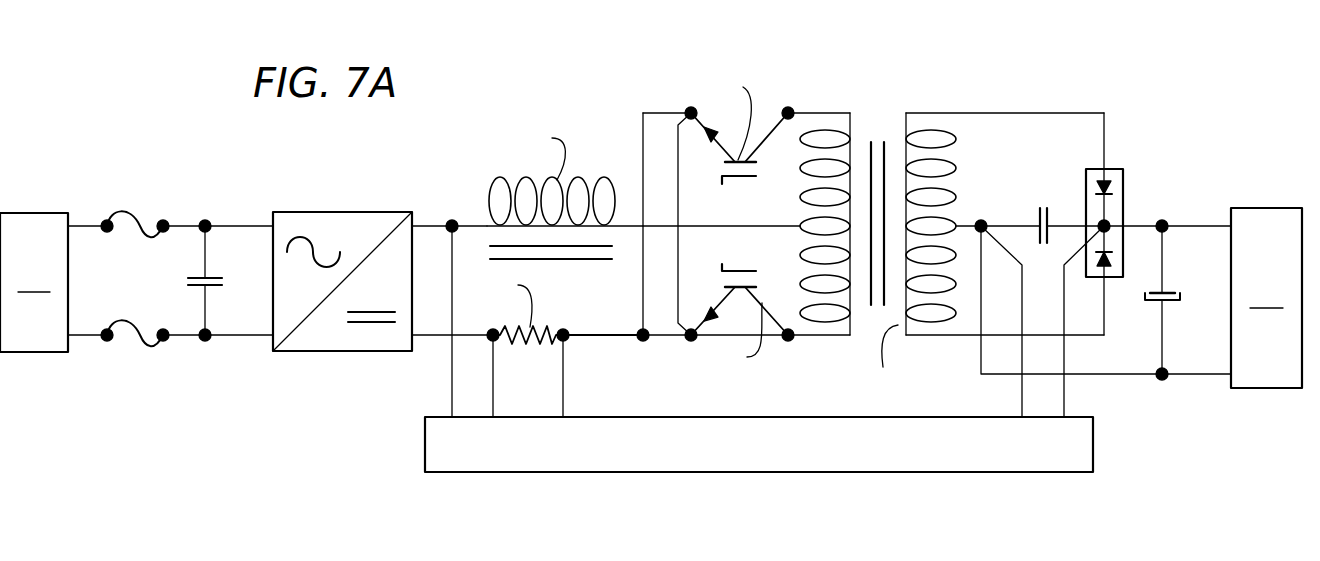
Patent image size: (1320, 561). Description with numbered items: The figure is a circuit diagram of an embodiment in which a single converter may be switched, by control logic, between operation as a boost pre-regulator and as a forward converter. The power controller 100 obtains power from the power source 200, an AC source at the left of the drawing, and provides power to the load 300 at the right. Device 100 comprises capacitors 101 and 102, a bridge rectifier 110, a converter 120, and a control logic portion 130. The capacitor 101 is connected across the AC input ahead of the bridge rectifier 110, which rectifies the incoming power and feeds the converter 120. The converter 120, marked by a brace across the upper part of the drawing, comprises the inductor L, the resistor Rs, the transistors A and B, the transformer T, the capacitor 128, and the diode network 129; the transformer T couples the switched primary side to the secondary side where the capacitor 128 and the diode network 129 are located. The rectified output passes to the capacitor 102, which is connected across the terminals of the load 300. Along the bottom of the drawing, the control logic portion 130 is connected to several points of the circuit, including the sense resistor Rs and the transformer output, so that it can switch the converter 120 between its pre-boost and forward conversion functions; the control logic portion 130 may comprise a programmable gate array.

The power controller 100 is at (268, 447).
The capacitor 101 is at (206, 294).
The capacitor 102 is at (1163, 257).
The bridge rectifier 110 is at (323, 212).
The converter 120 is at (487, 72).
The capacitor 128 is at (1037, 212).
The diode network 129 is at (1110, 187).
The control logic portion 130 is at (992, 472).
The power source 200 is at (53, 282).
The load 300 is at (1266, 298).